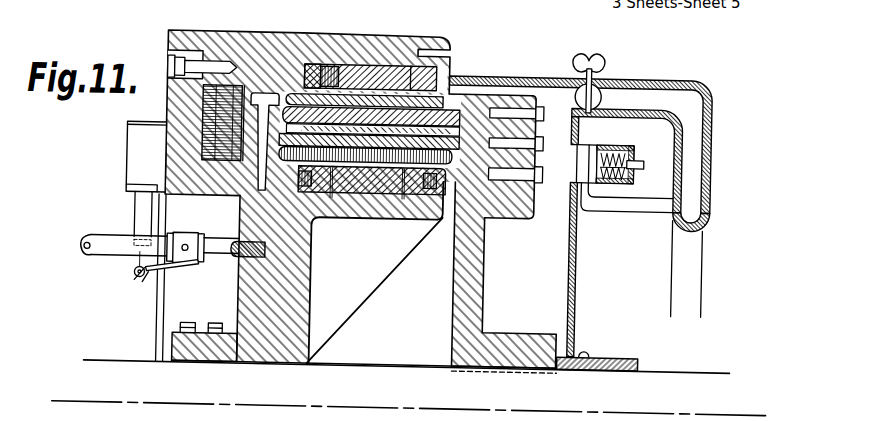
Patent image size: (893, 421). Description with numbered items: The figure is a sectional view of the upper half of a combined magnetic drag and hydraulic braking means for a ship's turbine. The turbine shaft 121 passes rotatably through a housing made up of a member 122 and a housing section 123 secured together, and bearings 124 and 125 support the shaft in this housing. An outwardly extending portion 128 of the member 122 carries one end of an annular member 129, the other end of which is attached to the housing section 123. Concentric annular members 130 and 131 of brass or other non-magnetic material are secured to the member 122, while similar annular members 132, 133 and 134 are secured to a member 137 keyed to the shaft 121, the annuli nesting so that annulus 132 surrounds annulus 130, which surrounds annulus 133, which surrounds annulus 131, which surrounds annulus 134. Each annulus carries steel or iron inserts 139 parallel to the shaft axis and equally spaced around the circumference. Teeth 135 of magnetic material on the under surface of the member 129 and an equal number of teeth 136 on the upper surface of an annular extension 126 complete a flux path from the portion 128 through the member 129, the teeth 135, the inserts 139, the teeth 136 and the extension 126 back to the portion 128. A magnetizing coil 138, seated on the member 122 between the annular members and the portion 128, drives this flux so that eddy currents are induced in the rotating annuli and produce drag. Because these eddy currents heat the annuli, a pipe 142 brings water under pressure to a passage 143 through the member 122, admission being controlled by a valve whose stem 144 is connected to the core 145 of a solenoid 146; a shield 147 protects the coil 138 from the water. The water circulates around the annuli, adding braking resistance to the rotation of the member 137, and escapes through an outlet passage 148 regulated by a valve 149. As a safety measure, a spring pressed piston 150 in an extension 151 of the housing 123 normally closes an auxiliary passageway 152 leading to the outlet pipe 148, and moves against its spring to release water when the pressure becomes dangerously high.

The turbine shaft 121 is at (409, 387).
The housing member 122 is at (271, 354).
The housing section 123 is at (531, 77).
The bearing 124 is at (175, 351).
The bearing 125 is at (641, 359).
The annular extension 126 is at (349, 209).
The outwardly extending portion 128 is at (172, 116).
The annular member 129 is at (285, 42).
The annular member 130 is at (248, 126).
The annular member 131 is at (252, 164).
The annular member 132 is at (448, 97).
The annular member 133 is at (459, 133).
The annular member 134 is at (509, 199).
The teeth 135 is at (360, 70).
The teeth 136 is at (394, 190).
The member 137 is at (487, 286).
The magnetizing coil 138 is at (198, 112).
The inserts 139 is at (408, 222).
The pipe 142 is at (81, 251).
The passage 143 is at (314, 253).
The valve stem 144 is at (134, 282).
The core 145 is at (135, 224).
The solenoid 146 is at (126, 167).
The shield 147 is at (248, 89).
The outlet passage 148 is at (712, 298).
The valve 149 is at (601, 80).
The spring pressed piston 150 is at (588, 152).
The extension 151 is at (632, 171).
The auxiliary passageway 152 is at (636, 206).